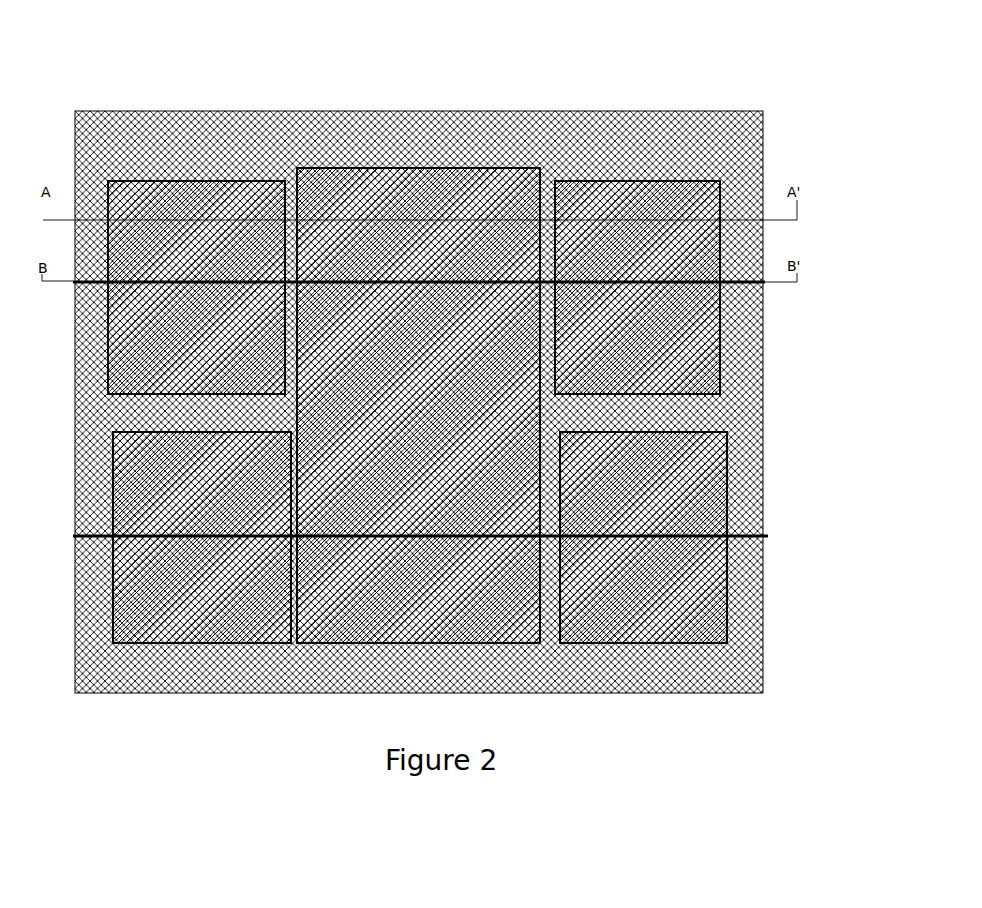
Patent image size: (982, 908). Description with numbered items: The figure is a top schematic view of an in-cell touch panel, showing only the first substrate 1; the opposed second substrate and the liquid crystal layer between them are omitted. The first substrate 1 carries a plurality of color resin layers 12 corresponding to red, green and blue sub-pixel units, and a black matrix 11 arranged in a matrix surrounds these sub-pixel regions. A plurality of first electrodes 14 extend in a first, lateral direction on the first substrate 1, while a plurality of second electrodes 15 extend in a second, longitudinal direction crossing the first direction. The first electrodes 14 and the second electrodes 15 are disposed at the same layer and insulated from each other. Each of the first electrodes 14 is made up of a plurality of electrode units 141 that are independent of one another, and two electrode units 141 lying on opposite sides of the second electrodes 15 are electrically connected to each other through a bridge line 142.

The first substrate 1 is at (454, 369).
The black matrix 11 is at (592, 135).
The color resin layers 12 is at (155, 178).
The first electrodes 14 is at (543, 148).
The electrode units 141 is at (750, 408).
The bridge line 142 is at (768, 538).
The second electrodes 15 is at (500, 678).